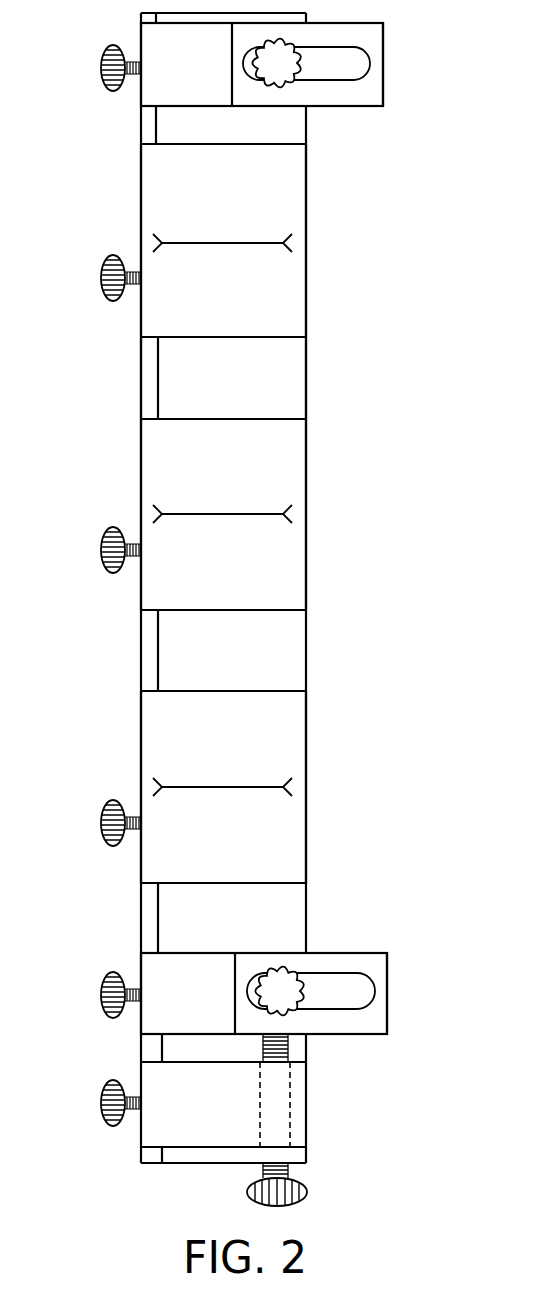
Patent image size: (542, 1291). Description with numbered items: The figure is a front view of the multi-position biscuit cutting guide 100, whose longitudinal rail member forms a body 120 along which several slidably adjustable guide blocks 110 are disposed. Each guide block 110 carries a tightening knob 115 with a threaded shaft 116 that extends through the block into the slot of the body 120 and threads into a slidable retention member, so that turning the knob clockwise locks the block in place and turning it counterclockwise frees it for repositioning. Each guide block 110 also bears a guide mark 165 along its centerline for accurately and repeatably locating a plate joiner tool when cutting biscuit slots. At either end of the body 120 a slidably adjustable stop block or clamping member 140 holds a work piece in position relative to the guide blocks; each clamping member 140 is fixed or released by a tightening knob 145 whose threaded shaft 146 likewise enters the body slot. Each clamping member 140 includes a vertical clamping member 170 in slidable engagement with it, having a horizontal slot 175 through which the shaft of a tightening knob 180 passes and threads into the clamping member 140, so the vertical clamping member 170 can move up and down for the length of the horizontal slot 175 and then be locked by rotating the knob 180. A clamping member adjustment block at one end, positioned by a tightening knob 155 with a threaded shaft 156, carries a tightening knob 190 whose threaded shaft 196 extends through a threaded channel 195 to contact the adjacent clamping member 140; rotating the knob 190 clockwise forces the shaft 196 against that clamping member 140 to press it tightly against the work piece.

The multi-position biscuit cutting guide 100 is at (115, 680).
The slidably adjustable guide block 110 is at (306, 258).
The tightening knob 115 is at (102, 286).
The threaded shaft 116 is at (128, 268).
The body 120 is at (306, 368).
The slidably adjustable stop block or clamping member 140 is at (187, 107).
The tightening knob 145 is at (102, 76).
The threaded shaft 146 is at (128, 58).
The tightening knob 155 is at (104, 1108).
The threaded shaft 156 is at (128, 1090).
The guide mark 165 is at (255, 243).
The vertical clamping member 170 is at (328, 107).
The horizontal slot 175 is at (342, 63).
The tightening knob 180 is at (283, 86).
The tightening knob 190 is at (290, 1203).
The threaded channel 195 is at (282, 1100).
The threaded shaft 196 is at (293, 1174).